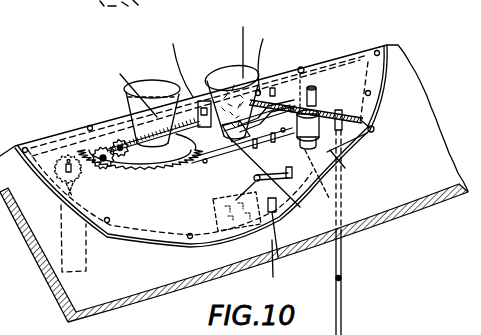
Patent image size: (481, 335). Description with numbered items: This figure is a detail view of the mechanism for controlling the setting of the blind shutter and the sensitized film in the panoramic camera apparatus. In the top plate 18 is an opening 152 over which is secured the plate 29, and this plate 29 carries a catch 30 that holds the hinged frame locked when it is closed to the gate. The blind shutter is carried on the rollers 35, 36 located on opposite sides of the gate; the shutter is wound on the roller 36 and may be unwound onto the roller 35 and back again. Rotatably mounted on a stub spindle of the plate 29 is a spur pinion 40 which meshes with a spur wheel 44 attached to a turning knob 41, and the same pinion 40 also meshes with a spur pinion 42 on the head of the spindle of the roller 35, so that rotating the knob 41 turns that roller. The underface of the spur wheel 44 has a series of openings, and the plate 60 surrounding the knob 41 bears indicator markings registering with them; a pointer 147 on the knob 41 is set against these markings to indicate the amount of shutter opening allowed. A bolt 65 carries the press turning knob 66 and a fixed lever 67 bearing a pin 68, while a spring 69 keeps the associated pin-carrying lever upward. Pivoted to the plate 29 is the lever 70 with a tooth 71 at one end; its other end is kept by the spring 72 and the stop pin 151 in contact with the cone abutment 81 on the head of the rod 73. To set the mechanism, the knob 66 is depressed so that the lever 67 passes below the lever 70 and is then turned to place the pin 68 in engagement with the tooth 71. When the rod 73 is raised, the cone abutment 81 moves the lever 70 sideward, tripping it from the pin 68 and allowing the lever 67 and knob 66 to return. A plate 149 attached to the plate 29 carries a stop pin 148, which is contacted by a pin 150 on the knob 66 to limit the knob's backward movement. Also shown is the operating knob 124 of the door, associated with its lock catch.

The top plate 18 is at (412, 105).
The plate 29 is at (298, 72).
The catch 30 is at (215, 212).
The roller 35 is at (72, 246).
The roller 36 is at (330, 170).
The spur pinion 40 is at (103, 171).
The turning knob 41 is at (153, 92).
The spur pinion 42 is at (63, 160).
The spur wheel 44 is at (124, 158).
The plate 60 is at (115, 128).
The bolt 65 is at (226, 115).
The press turning knob 66 is at (218, 78).
The lever 67 is at (225, 146).
The pin 68 is at (250, 142).
The spring 69 is at (270, 88).
The lever 70 is at (347, 147).
The tooth 71 is at (298, 124).
The spring 72 is at (276, 202).
The rod 73 is at (343, 298).
The cone abutment 81 is at (355, 136).
The operating knob 124 is at (0, 91).
The pointer 147 is at (130, 85).
The stop pin 148 is at (178, 61).
The plate 149 is at (269, 56).
The pin 150 is at (244, 43).
The stop pin 151 is at (353, 178).
The opening 152 is at (278, 268).